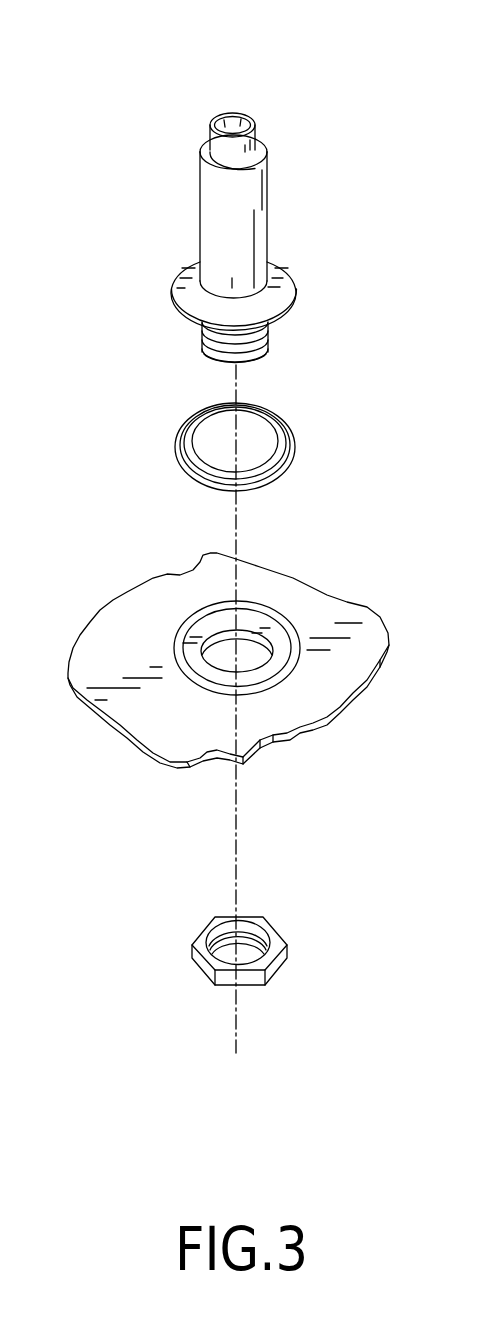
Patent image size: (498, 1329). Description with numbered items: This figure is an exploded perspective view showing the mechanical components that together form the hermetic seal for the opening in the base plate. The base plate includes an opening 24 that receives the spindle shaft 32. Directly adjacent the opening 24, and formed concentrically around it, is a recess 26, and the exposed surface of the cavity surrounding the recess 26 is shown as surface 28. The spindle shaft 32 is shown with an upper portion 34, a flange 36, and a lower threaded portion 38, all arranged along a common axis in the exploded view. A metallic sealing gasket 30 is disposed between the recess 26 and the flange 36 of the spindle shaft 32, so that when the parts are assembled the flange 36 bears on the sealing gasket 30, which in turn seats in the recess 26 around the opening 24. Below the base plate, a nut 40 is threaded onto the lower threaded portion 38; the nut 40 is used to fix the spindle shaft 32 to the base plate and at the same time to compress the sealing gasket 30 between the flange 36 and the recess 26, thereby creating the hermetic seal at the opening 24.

The opening 24 is at (248, 664).
The recess 26 is at (280, 638).
The surface 28 is at (325, 610).
The metallic sealing gasket 30 is at (293, 430).
The spindle shaft 32 is at (163, 160).
The upper portion 34 is at (201, 217).
The flange 36 is at (190, 297).
The lower threaded portion 38 is at (215, 362).
The nut 40 is at (284, 962).